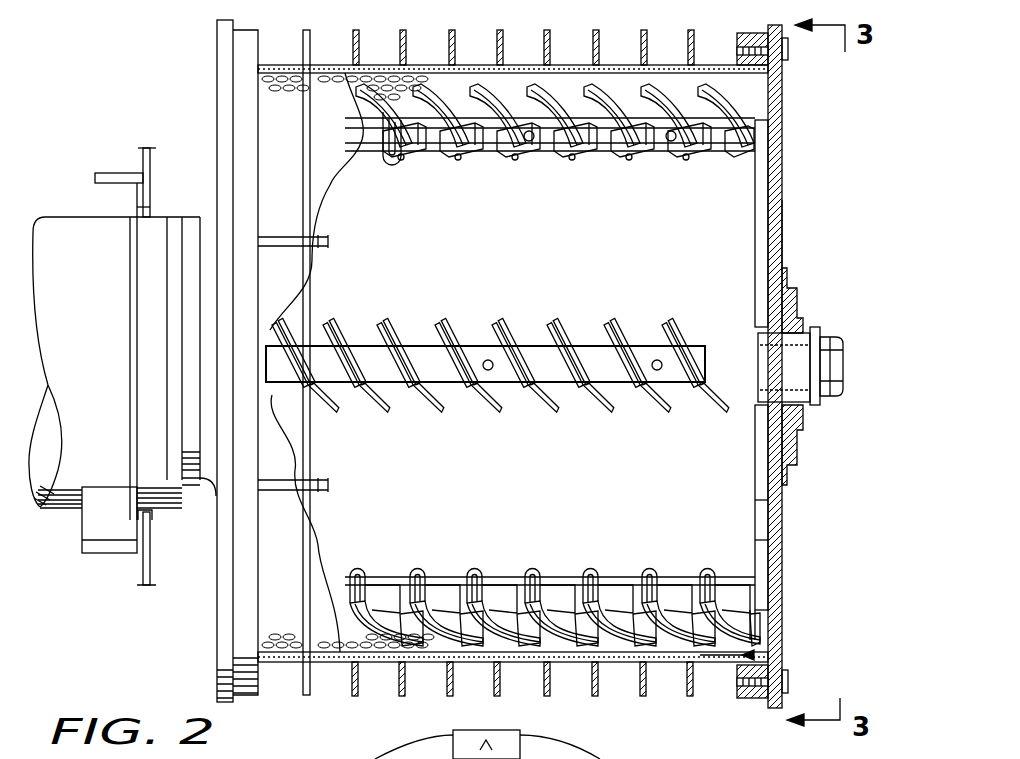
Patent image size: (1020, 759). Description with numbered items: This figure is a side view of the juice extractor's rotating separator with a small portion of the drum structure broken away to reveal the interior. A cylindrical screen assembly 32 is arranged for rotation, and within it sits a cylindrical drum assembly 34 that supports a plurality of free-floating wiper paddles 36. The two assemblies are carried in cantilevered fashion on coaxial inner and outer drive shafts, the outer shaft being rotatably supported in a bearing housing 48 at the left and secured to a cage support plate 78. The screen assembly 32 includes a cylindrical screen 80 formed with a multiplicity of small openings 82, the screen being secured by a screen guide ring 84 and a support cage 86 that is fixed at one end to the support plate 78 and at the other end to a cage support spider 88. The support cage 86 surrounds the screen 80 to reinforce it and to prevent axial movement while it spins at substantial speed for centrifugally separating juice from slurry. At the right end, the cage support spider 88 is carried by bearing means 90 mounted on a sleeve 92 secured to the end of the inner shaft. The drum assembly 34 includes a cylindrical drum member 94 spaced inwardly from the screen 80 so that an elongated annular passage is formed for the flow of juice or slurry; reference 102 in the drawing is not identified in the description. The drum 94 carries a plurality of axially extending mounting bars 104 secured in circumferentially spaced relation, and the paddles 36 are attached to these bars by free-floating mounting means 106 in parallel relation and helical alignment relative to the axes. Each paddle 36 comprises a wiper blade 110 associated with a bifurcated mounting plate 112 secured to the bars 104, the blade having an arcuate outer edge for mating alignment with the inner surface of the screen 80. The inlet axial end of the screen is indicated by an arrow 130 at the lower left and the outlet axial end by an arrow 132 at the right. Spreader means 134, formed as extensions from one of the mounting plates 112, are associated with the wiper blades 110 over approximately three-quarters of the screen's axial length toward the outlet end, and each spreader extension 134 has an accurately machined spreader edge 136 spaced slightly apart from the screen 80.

The cylindrical screen assembly 32 is at (783, 106).
The cylindrical drum assembly 34 is at (760, 153).
The wiper paddles 36 is at (489, 94).
The bearing housing 48 is at (92, 300).
The cage support plate 78 is at (248, 663).
The cylindrical screen 80 is at (706, 64).
The small openings 82 is at (364, 68).
The screen guide ring 84 is at (248, 42).
The support cage 86 is at (600, 53).
The cage support spider 88 is at (786, 240).
The bearing means 90 is at (795, 312).
The sleeve 92 is at (800, 415).
The cylindrical drum member 94 is at (768, 502).
The wall portion 102 is at (760, 541).
The mounting bars 104 is at (378, 150).
The free-floating mounting means 106 is at (508, 167).
The wiper blade 110 is at (558, 82).
The mounting plate 112 is at (485, 110).
The inlet axial end arrow 130 is at (292, 625).
The outlet axial end arrow 132 is at (790, 655).
The spreader means 134 is at (595, 160).
The spreader edge 136 is at (548, 162).